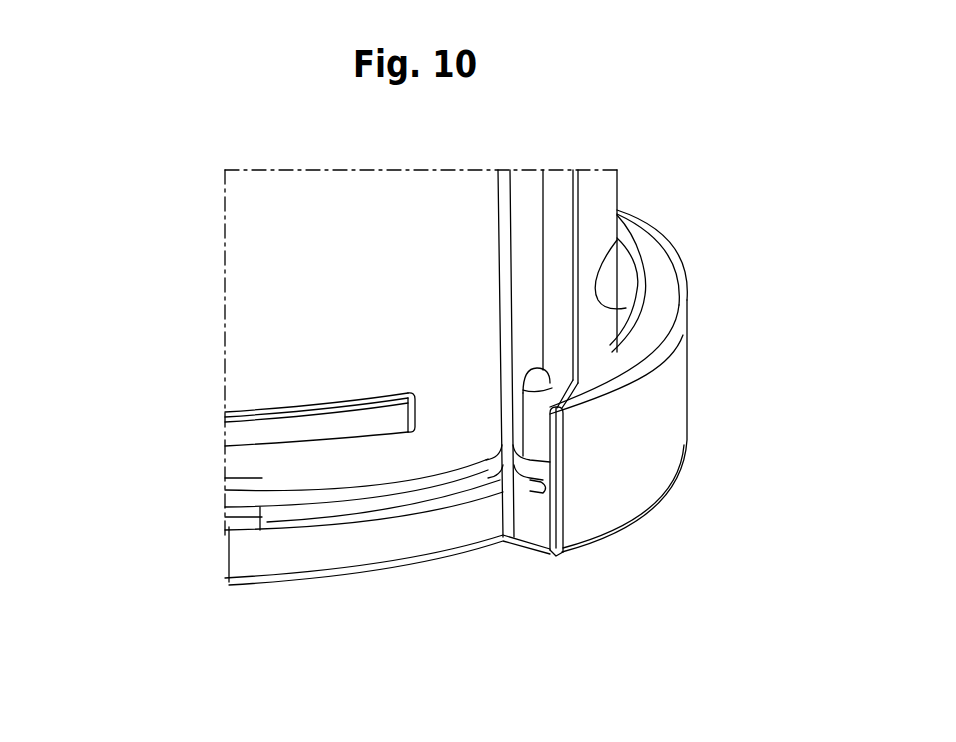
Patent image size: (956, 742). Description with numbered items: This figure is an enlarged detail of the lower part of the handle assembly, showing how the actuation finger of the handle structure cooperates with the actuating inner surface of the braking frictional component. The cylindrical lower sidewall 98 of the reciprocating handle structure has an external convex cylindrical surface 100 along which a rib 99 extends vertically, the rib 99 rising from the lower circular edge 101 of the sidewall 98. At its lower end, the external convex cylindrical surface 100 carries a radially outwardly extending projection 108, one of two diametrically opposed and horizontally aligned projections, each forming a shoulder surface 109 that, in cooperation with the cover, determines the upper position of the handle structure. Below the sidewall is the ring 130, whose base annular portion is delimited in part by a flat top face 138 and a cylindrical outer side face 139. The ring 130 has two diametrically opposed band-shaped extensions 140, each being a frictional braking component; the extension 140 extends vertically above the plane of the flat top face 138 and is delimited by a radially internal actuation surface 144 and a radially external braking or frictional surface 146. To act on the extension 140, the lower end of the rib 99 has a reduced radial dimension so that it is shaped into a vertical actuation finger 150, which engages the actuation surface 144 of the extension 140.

The cylindrical lower sidewall 98 is at (397, 448).
The rib 99 is at (523, 255).
The external convex cylindrical surface 100 is at (222, 482).
The lower circular edge 101 is at (262, 508).
The radially outwardly extending projection 108 is at (277, 427).
The shoulder surface 109 is at (274, 412).
The ring 130 is at (665, 507).
The flat top face 138 is at (443, 487).
The cylindrical outer side face 139 is at (410, 572).
The extension 140 is at (697, 300).
The radially internal actuation surface 144 is at (614, 246).
The radially external braking surface 146 is at (662, 373).
The vertical actuation finger 150 is at (533, 418).